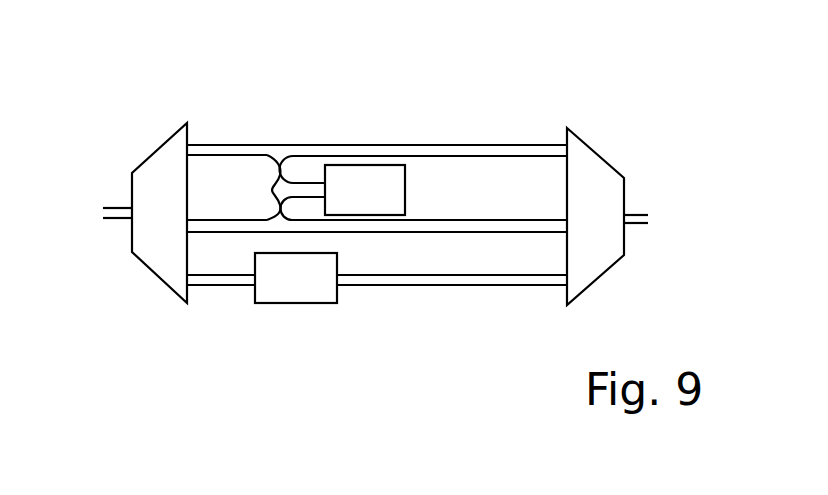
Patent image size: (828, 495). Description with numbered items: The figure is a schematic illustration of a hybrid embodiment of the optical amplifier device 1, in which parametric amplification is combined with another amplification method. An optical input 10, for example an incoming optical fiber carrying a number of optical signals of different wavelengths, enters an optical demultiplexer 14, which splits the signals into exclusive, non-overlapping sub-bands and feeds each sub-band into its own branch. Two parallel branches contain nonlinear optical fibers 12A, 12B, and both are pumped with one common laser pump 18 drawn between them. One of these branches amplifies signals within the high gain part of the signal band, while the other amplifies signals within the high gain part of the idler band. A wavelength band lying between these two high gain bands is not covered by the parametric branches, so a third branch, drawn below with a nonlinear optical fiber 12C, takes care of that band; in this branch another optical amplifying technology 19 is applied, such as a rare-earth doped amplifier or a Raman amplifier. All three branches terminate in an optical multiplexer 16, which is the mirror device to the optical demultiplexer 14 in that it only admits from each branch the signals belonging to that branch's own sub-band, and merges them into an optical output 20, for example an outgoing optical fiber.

The optical amplifier device 1 is at (183, 94).
The optical input 10 is at (116, 208).
The nonlinear optical fiber 12A is at (530, 155).
The nonlinear optical fiber 12B is at (463, 230).
The nonlinear optical fiber 12C is at (410, 283).
The optical demultiplexer 14 is at (170, 273).
The optical multiplexer 16 is at (590, 273).
The laser pump 18 is at (398, 180).
The optical amplifying technology 19 is at (310, 300).
The optical output 20 is at (640, 220).